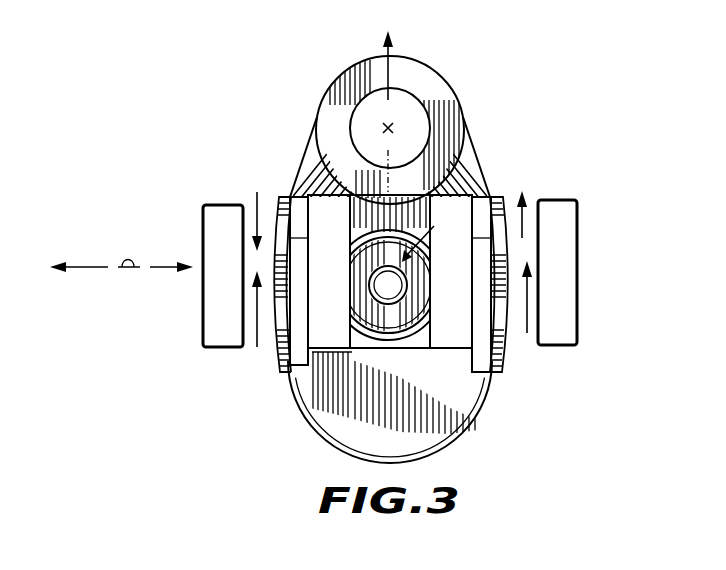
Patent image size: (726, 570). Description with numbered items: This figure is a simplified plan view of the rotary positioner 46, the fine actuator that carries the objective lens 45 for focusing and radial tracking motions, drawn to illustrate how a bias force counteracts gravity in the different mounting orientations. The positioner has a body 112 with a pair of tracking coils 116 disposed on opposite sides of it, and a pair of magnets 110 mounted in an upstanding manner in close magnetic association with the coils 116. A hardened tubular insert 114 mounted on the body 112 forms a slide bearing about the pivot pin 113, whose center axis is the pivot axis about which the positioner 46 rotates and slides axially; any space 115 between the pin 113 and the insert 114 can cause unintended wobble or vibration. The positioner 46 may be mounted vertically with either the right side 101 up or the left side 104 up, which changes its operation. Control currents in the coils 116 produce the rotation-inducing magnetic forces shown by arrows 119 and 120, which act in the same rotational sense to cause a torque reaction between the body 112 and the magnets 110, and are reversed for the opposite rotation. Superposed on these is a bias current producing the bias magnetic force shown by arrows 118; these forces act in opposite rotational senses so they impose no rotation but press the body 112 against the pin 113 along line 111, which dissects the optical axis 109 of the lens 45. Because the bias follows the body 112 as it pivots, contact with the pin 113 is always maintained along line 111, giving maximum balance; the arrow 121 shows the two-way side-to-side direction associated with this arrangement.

The objective lens 45 is at (422, 118).
The rotary positioner 46 is at (496, 142).
The right side 101 is at (652, 277).
The left side 104 is at (166, 346).
The optical axis 109 is at (384, 127).
The magnets 110 is at (217, 204).
The bias force line 111 is at (389, 70).
The body 112 is at (292, 196).
The pivot pin 113 is at (386, 304).
The hardened tubular insert 114 is at (418, 279).
The space 115 is at (433, 238).
The tracking coils 116 is at (289, 296).
The bias force arrows 118 is at (258, 350).
The rotation-inducing magnetic force arrow 119 is at (259, 200).
The rotation-inducing magnetic force arrow 120 is at (513, 203).
The oscillation direction arrow 121 is at (128, 268).